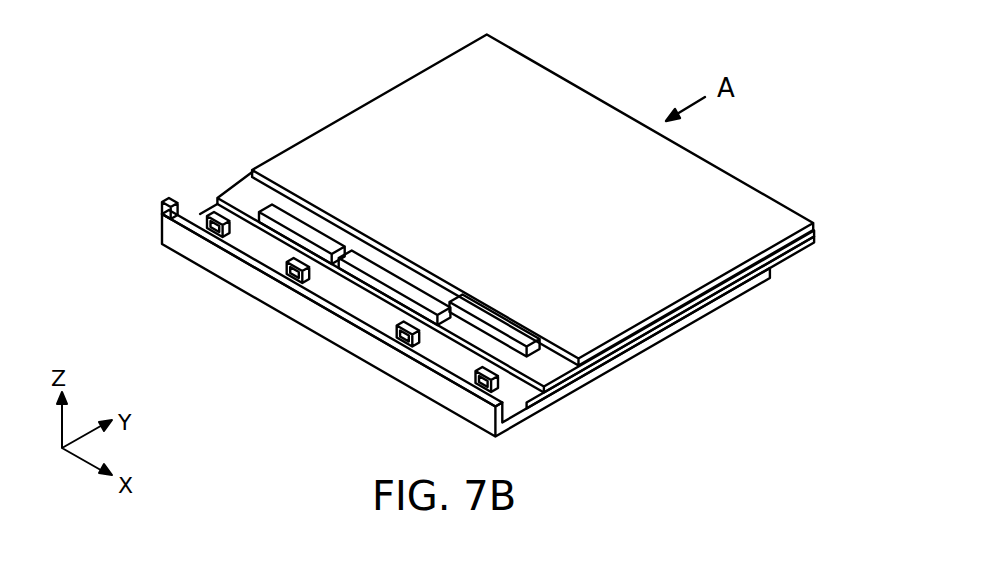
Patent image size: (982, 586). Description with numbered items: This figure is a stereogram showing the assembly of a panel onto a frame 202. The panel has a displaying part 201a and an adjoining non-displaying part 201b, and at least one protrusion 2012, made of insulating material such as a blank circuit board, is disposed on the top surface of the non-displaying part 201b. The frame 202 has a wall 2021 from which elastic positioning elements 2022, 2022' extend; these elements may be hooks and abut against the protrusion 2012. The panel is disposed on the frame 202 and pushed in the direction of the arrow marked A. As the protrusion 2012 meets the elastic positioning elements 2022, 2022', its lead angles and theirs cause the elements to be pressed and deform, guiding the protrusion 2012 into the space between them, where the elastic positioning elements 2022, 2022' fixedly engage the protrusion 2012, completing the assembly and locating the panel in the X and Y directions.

The displaying part 201a is at (655, 298).
The non-displaying part 201b is at (553, 372).
The protrusion 2012 is at (293, 222).
The frame 202 is at (530, 410).
The wall 2021 is at (240, 252).
The elastic positioning element 2022 is at (331, 302).
The elastic positioning element 2022' is at (118, 232).